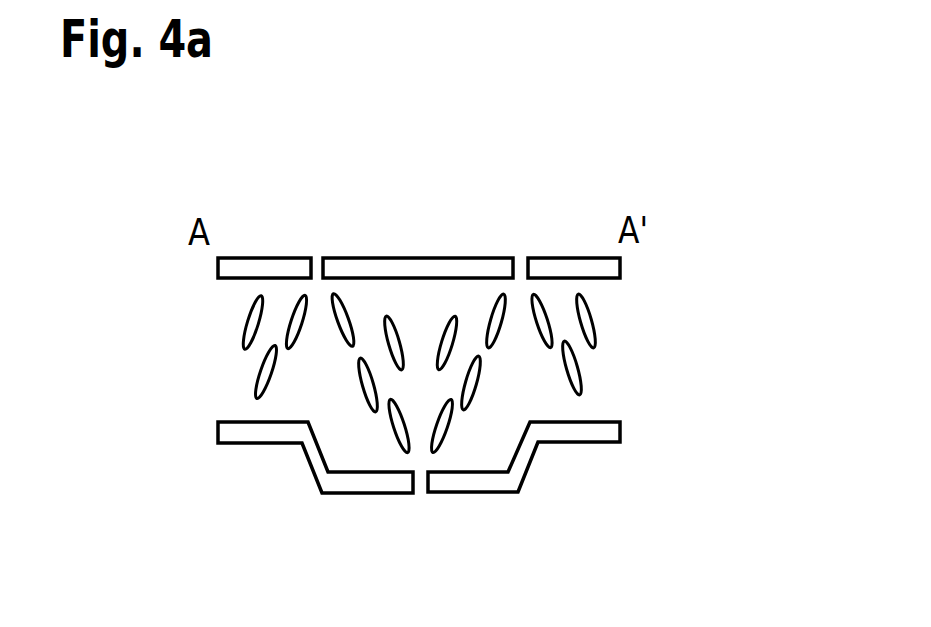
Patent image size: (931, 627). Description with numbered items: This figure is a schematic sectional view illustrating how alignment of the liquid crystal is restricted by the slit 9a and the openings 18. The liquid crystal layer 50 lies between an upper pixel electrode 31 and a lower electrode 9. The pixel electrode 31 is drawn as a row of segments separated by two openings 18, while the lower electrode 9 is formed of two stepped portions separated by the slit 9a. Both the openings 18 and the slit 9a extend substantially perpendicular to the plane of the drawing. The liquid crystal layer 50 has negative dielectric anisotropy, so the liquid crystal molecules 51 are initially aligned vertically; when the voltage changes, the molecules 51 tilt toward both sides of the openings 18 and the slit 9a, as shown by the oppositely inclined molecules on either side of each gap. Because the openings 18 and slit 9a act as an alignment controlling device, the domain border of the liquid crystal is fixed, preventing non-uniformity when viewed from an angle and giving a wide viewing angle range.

The electrode 9 is at (583, 432).
The slit 9a is at (431, 512).
The openings 18 is at (317, 237).
The pixel electrode 31 is at (608, 268).
The liquid crystal layer 50 is at (210, 280).
The liquid crystal molecules 51 is at (590, 318).